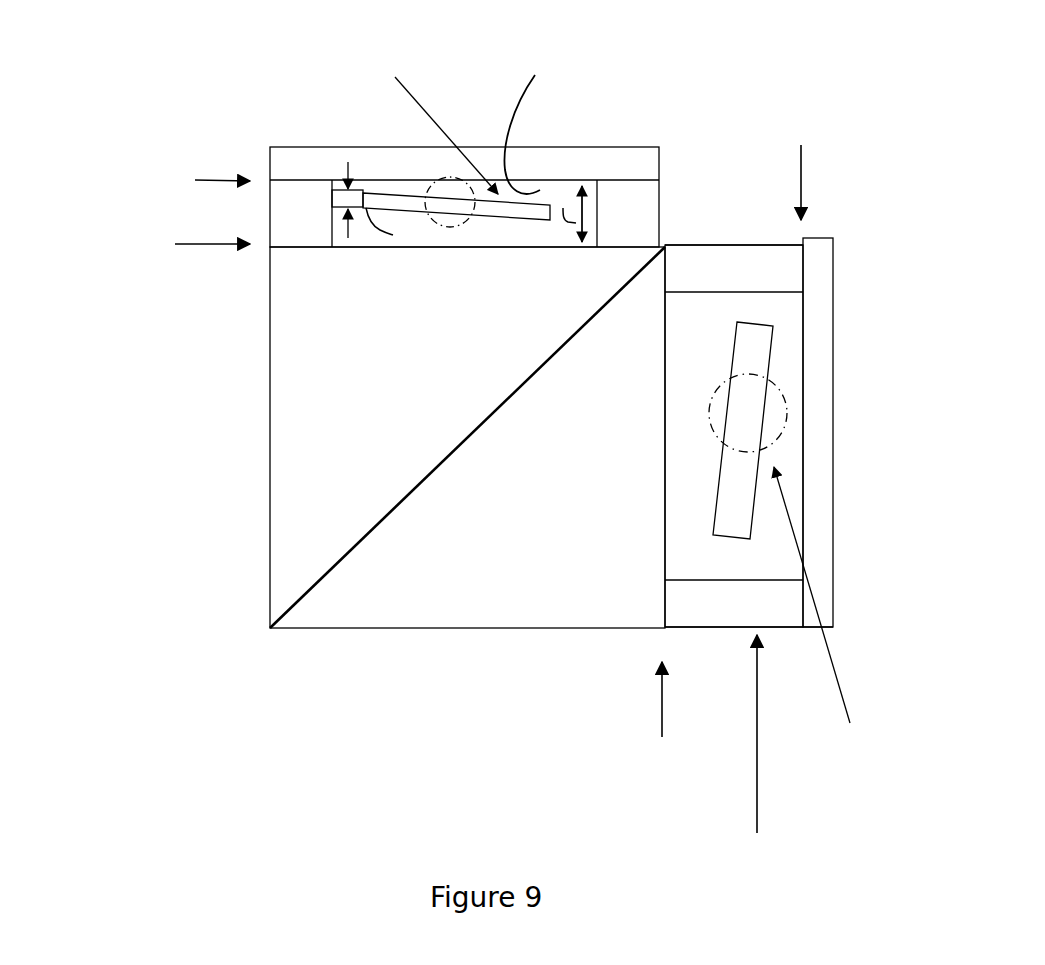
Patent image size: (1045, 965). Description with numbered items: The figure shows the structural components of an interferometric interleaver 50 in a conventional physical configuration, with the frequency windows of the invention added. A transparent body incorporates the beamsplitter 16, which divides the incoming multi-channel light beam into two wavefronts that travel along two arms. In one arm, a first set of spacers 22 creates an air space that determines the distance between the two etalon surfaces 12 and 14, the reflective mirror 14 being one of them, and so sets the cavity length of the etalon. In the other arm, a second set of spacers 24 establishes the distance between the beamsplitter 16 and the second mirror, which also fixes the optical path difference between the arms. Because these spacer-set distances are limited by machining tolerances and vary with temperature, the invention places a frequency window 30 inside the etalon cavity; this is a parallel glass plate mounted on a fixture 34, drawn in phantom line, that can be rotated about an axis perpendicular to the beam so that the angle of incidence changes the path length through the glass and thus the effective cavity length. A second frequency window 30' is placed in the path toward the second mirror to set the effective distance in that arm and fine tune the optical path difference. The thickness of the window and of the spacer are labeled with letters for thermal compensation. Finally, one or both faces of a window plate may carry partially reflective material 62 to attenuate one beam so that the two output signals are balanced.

The interferometric interleaver 50 is at (471, 447).
The beamsplitter 16 is at (322, 583).
The second set of spacers 24 is at (270, 207).
The second frequency window 30' is at (414, 153).
The etalon surface 12 is at (668, 445).
The first set of spacers 22 is at (742, 247).
The reflective mirror 14 is at (802, 350).
The frequency window 30 is at (799, 430).
The partially reflective material 62 is at (710, 508).
The fixture 34 is at (462, 223).